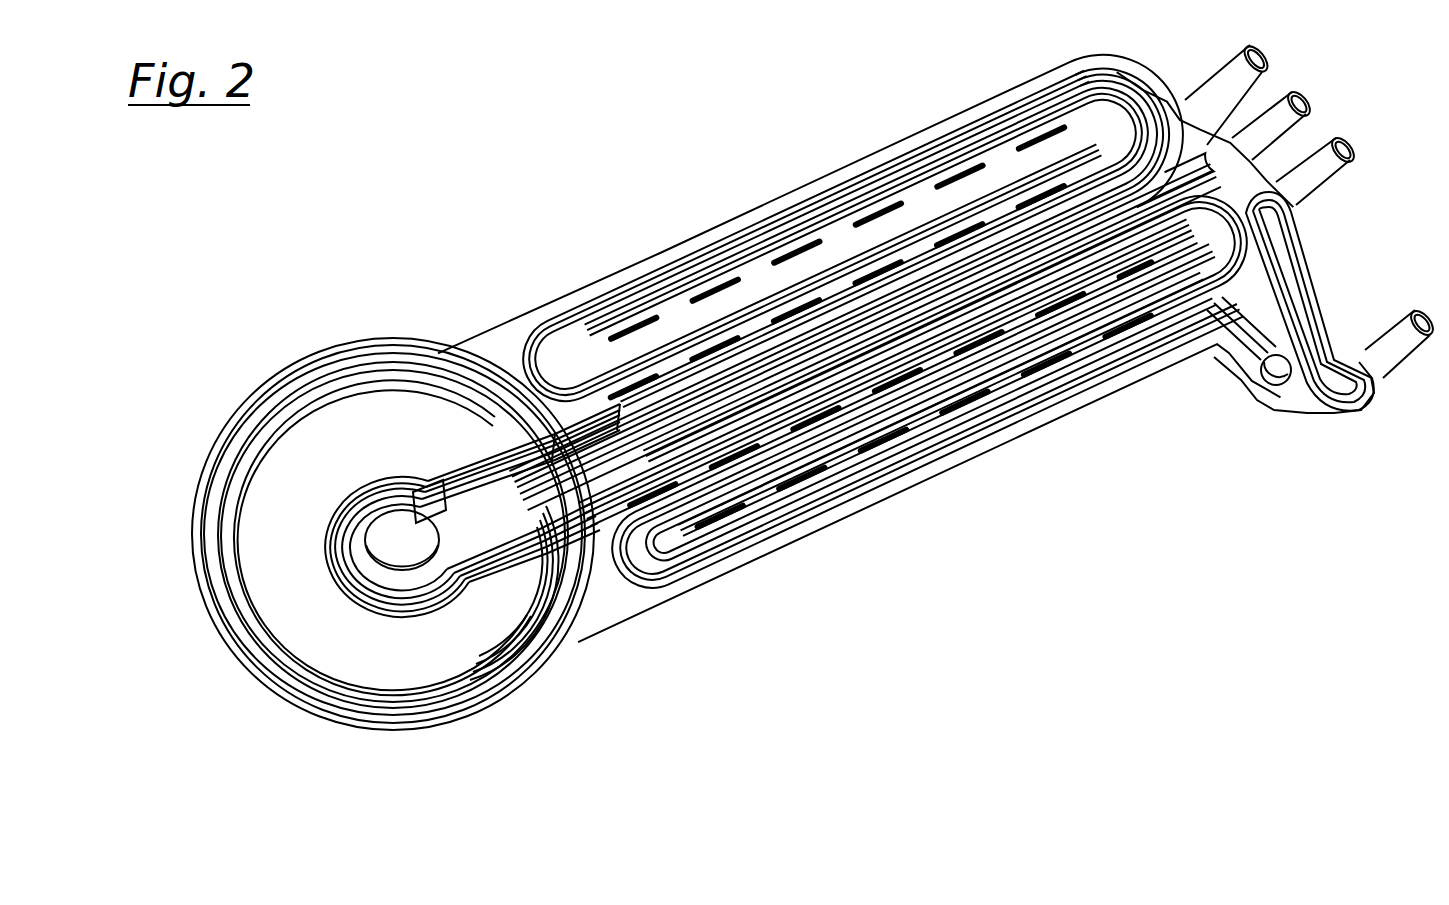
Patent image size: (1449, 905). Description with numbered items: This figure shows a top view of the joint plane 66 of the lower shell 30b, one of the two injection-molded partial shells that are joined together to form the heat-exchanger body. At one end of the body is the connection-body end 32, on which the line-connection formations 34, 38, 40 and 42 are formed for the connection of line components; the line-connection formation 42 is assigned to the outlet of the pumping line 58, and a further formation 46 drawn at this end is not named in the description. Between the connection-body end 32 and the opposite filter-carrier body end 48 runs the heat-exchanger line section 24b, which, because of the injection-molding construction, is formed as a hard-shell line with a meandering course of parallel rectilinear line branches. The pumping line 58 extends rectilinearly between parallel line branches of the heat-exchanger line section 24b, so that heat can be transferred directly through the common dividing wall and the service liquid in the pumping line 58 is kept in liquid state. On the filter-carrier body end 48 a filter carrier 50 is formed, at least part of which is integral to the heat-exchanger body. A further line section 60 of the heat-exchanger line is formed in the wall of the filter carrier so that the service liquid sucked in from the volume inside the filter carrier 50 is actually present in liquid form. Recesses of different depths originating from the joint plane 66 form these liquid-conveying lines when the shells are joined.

The heat-exchanger line section 24b is at (947, 440).
The lower shell 30b is at (622, 608).
The connection-body end 32 is at (1316, 443).
The line-connection formation 34 is at (1207, 92).
The line-connection formation 38 is at (1325, 173).
The line-connection formation 40 is at (1400, 353).
The line-connection formation 42 is at (1287, 120).
The manifold channel 46 is at (1303, 293).
The filter-carrier body end 48 is at (147, 445).
The filter carrier 50 is at (217, 347).
The pumping line 58 is at (1190, 183).
The line section 60 is at (463, 686).
The joint plane 66 is at (500, 327).